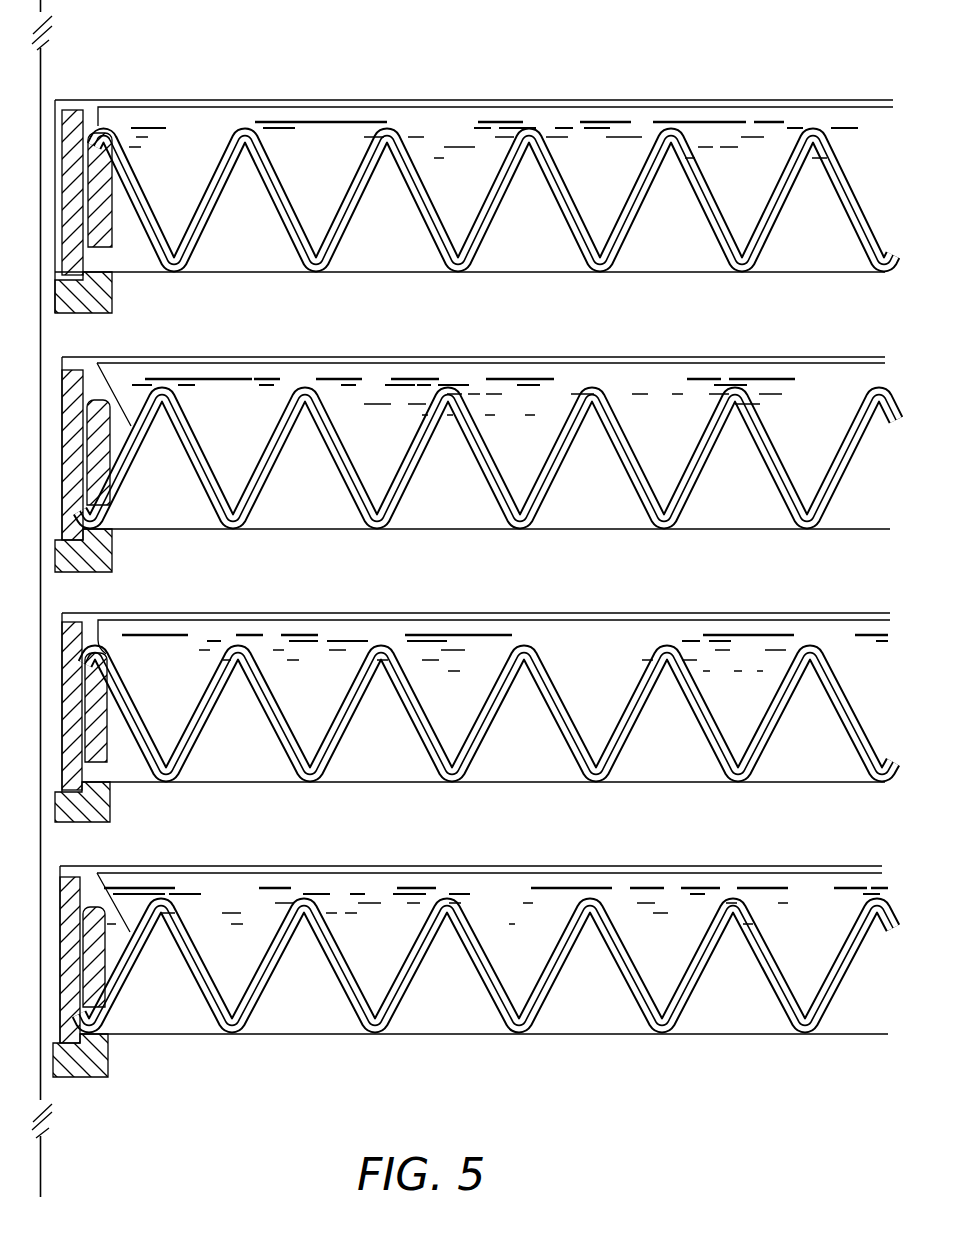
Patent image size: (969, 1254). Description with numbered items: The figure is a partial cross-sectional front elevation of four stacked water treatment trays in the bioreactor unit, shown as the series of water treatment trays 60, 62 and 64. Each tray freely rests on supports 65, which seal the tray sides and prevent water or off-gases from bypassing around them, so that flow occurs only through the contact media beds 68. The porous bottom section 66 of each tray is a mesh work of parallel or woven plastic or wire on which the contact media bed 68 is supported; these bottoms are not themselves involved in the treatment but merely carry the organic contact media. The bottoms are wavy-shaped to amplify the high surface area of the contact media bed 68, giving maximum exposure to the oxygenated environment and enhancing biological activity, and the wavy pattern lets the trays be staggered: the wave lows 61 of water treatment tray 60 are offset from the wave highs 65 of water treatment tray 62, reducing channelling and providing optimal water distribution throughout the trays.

The water treatment tray 60 is at (870, 128).
The wave lows 61 is at (600, 272).
The water treatment tray 62 is at (848, 383).
The water treatment tray 64 is at (810, 893).
The supports 65 is at (603, 388).
The porous bottom section 66 is at (667, 520).
The contact media bed 68 is at (733, 128).